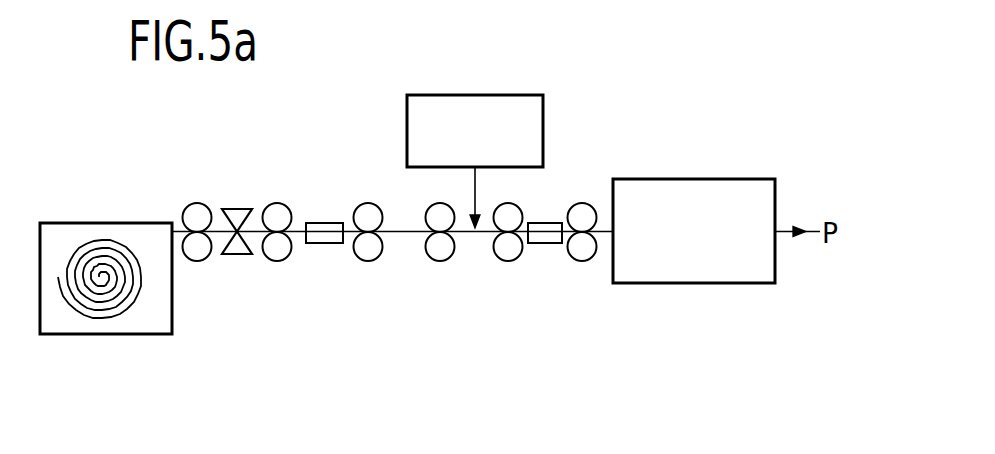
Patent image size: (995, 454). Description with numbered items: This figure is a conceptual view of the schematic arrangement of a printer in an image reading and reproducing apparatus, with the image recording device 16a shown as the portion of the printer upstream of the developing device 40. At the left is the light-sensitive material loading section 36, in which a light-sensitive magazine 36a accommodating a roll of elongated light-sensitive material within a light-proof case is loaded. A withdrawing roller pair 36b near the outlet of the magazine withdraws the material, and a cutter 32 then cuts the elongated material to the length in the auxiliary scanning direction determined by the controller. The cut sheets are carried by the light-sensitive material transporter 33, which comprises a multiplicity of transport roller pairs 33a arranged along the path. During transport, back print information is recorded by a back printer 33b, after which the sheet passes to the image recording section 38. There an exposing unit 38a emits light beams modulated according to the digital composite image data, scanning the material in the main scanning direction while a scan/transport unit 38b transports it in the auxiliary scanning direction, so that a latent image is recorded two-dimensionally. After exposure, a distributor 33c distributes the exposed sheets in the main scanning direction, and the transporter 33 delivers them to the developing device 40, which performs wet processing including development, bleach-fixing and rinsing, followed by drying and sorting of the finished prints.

The image recording unit 16a is at (354, 102).
The cutter 32 is at (233, 208).
The light-sensitive material transporter 33 is at (420, 234).
The transport roller pairs 33a is at (273, 259).
The back printer 33b is at (332, 223).
The distributor 33c is at (545, 223).
The light-sensitive material loading section 36 is at (106, 182).
The light-sensitive magazine 36a is at (107, 336).
The withdrawing roller pair 36b is at (200, 210).
The image recording section 38 is at (518, 178).
The exposing unit 38a is at (455, 95).
The scan/transport unit 38b is at (469, 270).
The developing device 40 is at (722, 180).